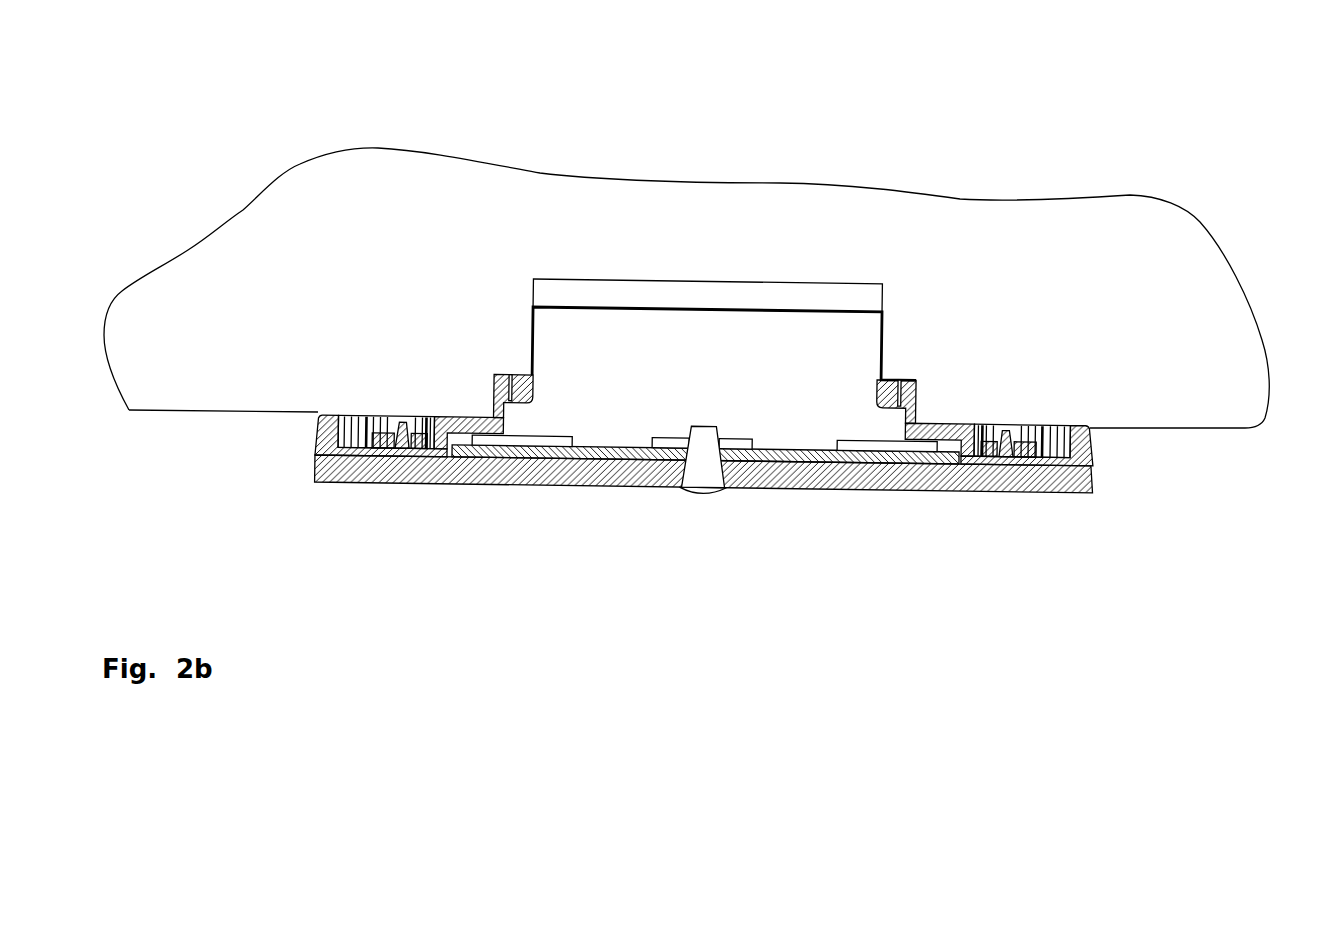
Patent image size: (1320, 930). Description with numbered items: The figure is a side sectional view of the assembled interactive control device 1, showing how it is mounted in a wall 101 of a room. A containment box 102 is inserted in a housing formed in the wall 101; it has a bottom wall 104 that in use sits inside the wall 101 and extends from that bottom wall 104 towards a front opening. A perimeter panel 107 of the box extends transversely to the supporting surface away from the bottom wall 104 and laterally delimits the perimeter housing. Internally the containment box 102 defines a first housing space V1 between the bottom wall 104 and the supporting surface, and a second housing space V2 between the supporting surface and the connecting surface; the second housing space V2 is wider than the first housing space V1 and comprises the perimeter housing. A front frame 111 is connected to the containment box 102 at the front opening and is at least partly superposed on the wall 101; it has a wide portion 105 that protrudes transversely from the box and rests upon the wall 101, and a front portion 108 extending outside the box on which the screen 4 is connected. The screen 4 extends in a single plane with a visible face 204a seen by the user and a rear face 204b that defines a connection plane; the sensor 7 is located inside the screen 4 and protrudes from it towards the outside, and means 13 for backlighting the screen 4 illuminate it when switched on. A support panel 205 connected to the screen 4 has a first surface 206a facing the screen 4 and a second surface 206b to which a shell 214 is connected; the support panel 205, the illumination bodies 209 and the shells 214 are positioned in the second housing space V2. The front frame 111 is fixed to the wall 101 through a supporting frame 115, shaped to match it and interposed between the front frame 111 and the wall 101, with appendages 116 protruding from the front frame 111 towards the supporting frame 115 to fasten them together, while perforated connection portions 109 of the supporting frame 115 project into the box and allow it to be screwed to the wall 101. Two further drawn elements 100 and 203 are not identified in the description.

The interactive control device 1 is at (778, 545).
The screen 4 is at (634, 492).
The sensor 7 is at (702, 470).
The means for backlighting the screen 13 is at (675, 420).
The housing assembly 100 is at (686, 307).
The wall 101 is at (1192, 240).
The containment box 102 is at (531, 278).
The bottom wall 104 is at (695, 305).
The wide portion 105 is at (477, 425).
The perimeter panel 107 is at (447, 443).
The front portion 108 is at (390, 453).
The connection portions 109 is at (493, 373).
The front frame 111 is at (312, 441).
The supporting frame 115 is at (368, 412).
The appendages 116 is at (1007, 440).
The carrier plate 203 is at (1030, 490).
The visible face 204a is at (347, 487).
The rear face 204b is at (340, 450).
The support panel 205 is at (878, 460).
The first surface 206a is at (803, 458).
The second surface 206b is at (782, 447).
The illumination bodies 209 is at (877, 422).
The shell 214 is at (497, 440).
The first housing space V1 is at (733, 373).
The second housing space V2 is at (617, 443).